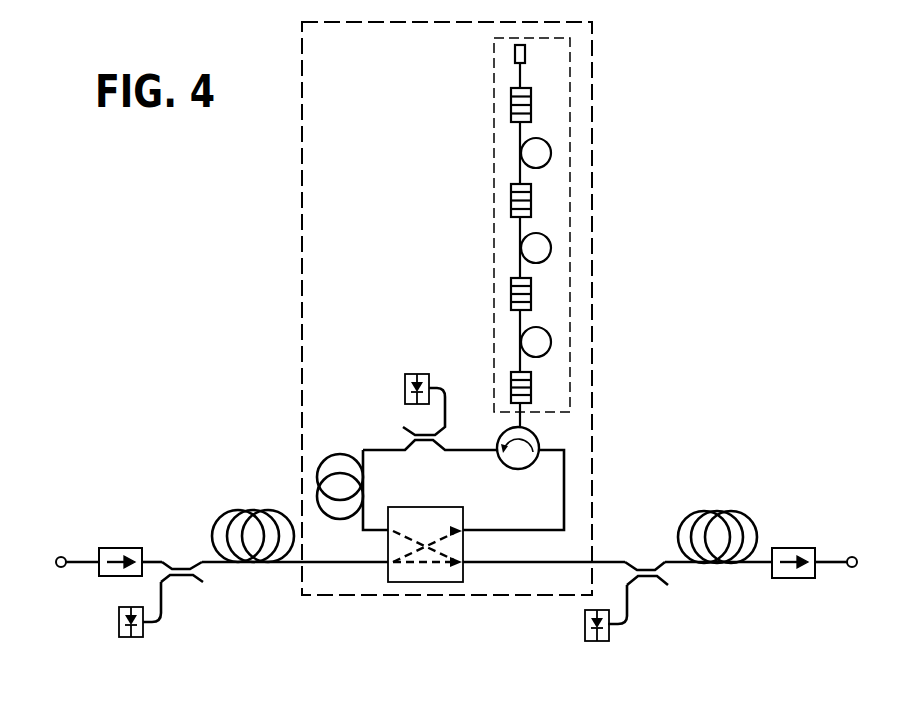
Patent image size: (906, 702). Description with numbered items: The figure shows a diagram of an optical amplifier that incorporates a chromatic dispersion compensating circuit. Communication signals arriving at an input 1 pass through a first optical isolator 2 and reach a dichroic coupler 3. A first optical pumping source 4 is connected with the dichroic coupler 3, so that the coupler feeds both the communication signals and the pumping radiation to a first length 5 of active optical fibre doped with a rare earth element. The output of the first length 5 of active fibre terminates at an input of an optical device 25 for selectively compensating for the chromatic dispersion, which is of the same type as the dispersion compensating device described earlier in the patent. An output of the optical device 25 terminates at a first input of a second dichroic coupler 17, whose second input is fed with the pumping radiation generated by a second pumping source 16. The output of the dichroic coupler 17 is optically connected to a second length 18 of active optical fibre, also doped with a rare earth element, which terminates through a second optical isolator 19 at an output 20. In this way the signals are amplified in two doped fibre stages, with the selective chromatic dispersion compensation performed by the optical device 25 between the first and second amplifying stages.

The input 1 is at (61, 556).
The first optical isolator 2 is at (121, 547).
The dichroic coupler 3 is at (178, 563).
The first optical pumping source 4 is at (133, 638).
The first length of active optical fibre 5 is at (252, 563).
The pumping source 16 is at (594, 643).
The dichroic coupler 17 is at (646, 581).
The second length of active optical fibre 18 is at (722, 565).
The second optical isolator 19 is at (792, 548).
The output 20 is at (851, 557).
The optical device for selectively compensating for the chromatic dispersion 25 is at (244, 271).